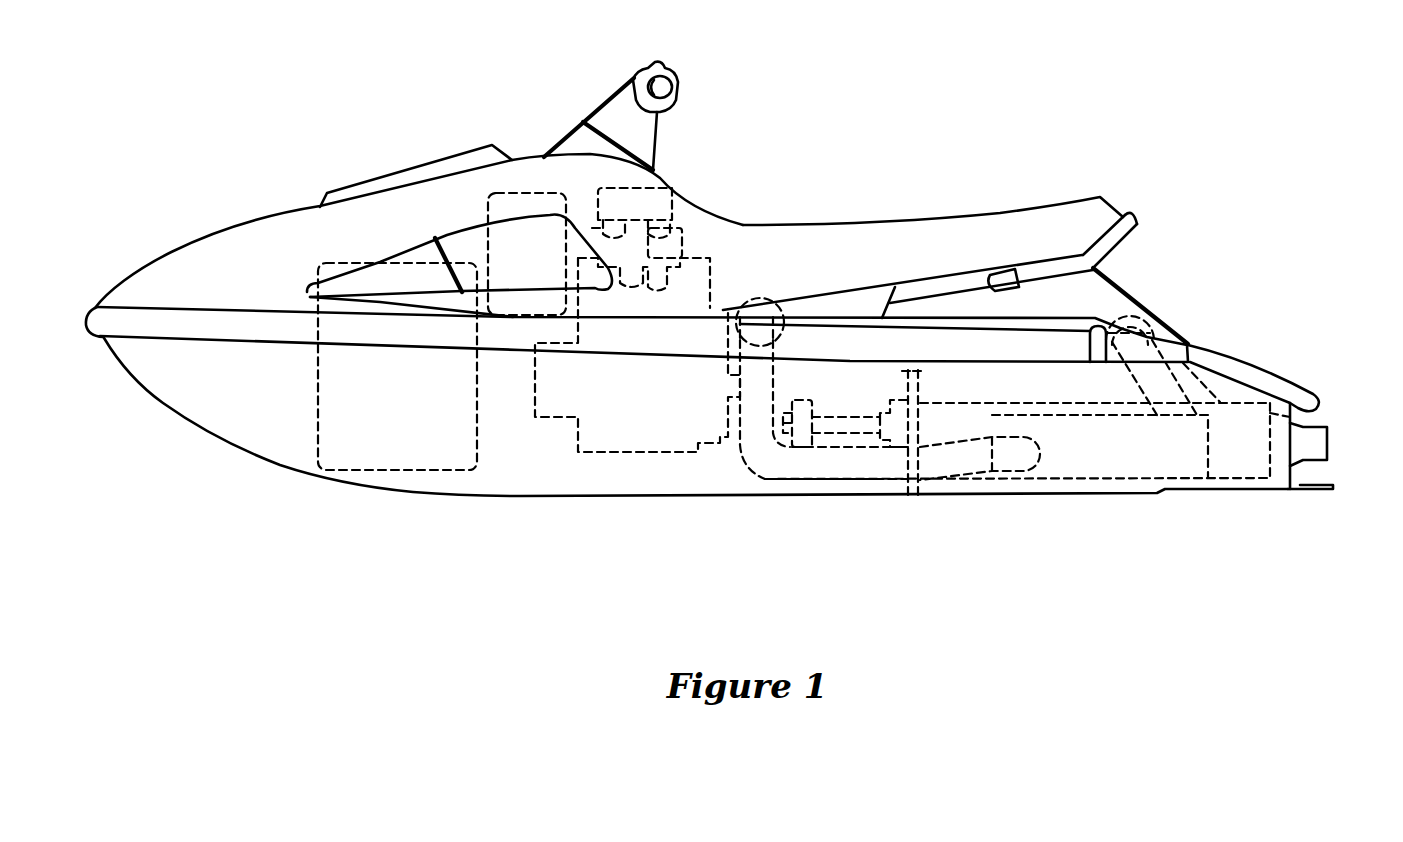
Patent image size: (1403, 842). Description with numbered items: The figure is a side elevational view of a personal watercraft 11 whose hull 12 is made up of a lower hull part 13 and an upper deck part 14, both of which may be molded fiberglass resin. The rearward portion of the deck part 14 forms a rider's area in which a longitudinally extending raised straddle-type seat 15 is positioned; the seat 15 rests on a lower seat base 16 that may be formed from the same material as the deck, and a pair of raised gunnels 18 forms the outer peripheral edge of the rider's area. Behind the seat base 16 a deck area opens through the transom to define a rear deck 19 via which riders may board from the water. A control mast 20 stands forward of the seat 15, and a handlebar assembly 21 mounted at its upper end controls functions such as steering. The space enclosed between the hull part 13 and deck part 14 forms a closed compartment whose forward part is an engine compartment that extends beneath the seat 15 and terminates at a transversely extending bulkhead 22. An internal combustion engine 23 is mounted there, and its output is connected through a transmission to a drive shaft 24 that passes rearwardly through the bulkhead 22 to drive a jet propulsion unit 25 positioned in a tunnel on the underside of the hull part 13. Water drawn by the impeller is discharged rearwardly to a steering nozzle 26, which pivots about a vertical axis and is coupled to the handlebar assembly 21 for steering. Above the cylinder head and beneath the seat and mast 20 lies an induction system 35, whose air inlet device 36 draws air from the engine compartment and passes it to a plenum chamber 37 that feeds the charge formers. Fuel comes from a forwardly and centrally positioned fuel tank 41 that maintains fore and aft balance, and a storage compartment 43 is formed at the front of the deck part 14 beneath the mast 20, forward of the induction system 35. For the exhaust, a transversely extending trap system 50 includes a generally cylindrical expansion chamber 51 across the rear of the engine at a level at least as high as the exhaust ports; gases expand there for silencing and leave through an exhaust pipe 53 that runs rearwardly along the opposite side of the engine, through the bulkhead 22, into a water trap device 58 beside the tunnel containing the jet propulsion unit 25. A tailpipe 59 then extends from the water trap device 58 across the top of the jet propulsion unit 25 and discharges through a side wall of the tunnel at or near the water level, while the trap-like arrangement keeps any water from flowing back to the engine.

The personal watercraft 11 is at (675, 548).
The hull 12 is at (162, 404).
The lower hull part 13 is at (506, 497).
The upper deck part 14 is at (527, 172).
The seat 15 is at (929, 221).
The seat base 16 is at (1096, 288).
The raised gunnels 18 is at (952, 320).
The rear deck 19 is at (1250, 362).
The control mast 20 is at (598, 110).
The handlebar assembly 21 is at (673, 88).
The bulkhead 22 is at (920, 458).
The internal combustion engine 23 is at (625, 455).
The drive shaft 24 is at (843, 434).
The jet propulsion unit 25 is at (1247, 483).
The steering nozzle 26 is at (1328, 455).
The induction system 35 is at (686, 247).
The air inlet device 36 is at (627, 190).
The plenum chamber 37 is at (698, 226).
The fuel tank 41 is at (318, 445).
The storage compartment 43 is at (485, 213).
The trap system 50 is at (773, 296).
The expansion chamber 51 is at (750, 296).
The exhaust pipe 53 is at (795, 480).
The water trap device 58 is at (1097, 480).
The tailpipe 59 is at (1135, 312).